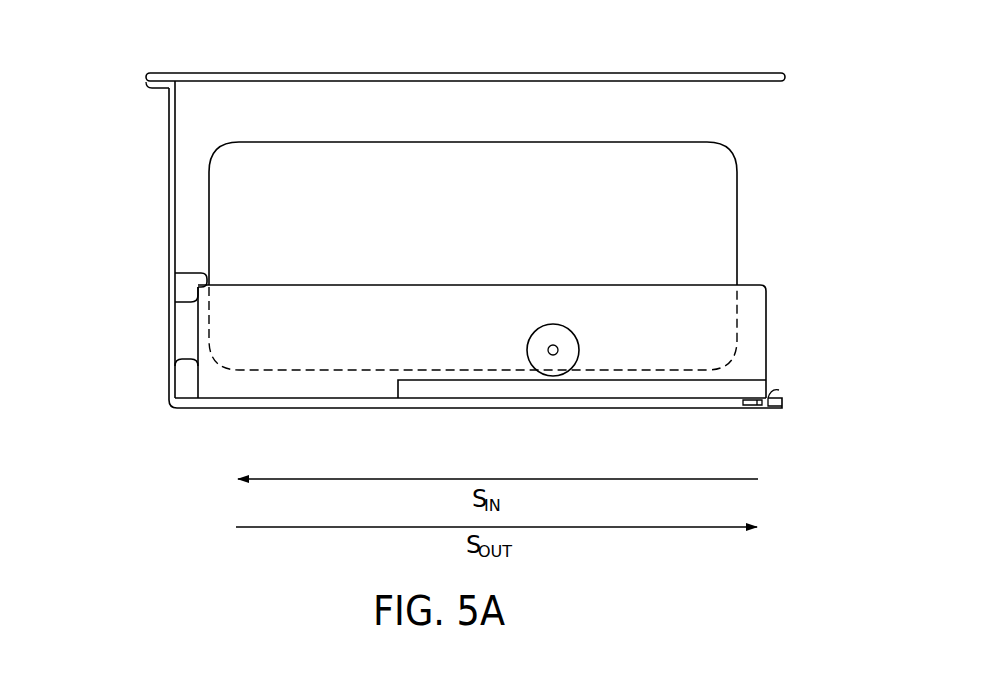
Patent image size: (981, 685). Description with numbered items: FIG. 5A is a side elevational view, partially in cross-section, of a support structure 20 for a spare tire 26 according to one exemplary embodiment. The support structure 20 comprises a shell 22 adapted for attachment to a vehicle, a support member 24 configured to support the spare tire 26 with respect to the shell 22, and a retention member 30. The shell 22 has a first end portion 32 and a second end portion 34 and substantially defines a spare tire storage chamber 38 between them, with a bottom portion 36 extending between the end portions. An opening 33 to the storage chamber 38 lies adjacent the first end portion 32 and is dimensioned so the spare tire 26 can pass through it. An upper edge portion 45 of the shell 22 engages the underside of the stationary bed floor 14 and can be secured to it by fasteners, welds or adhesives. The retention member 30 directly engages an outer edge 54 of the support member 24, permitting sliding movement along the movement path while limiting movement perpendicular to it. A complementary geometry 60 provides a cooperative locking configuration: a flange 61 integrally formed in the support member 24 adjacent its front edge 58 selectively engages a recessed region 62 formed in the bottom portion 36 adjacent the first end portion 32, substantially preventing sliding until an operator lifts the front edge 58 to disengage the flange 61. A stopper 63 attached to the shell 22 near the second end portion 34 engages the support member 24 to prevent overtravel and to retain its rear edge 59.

The bed floor 14 is at (730, 72).
The support structure 20 is at (121, 148).
The shell 22 is at (156, 198).
The support member 24 is at (778, 285).
The spare tire 26 is at (600, 151).
The retention member 30 is at (575, 348).
The first end portion 32 is at (808, 404).
The opening 33 is at (768, 116).
The second end portion 34 is at (166, 228).
The bottom portion 36 is at (628, 407).
The spare tire storage chamber 38 is at (296, 122).
The upper edge portion 45 is at (147, 86).
The outer edge 54 is at (454, 387).
The front edge 58 is at (768, 312).
The rear edge 59 is at (182, 362).
The complementary geometry 60 is at (780, 387).
The flange 61 is at (757, 406).
The recessed region 62 is at (779, 390).
The stopper 63 is at (180, 288).